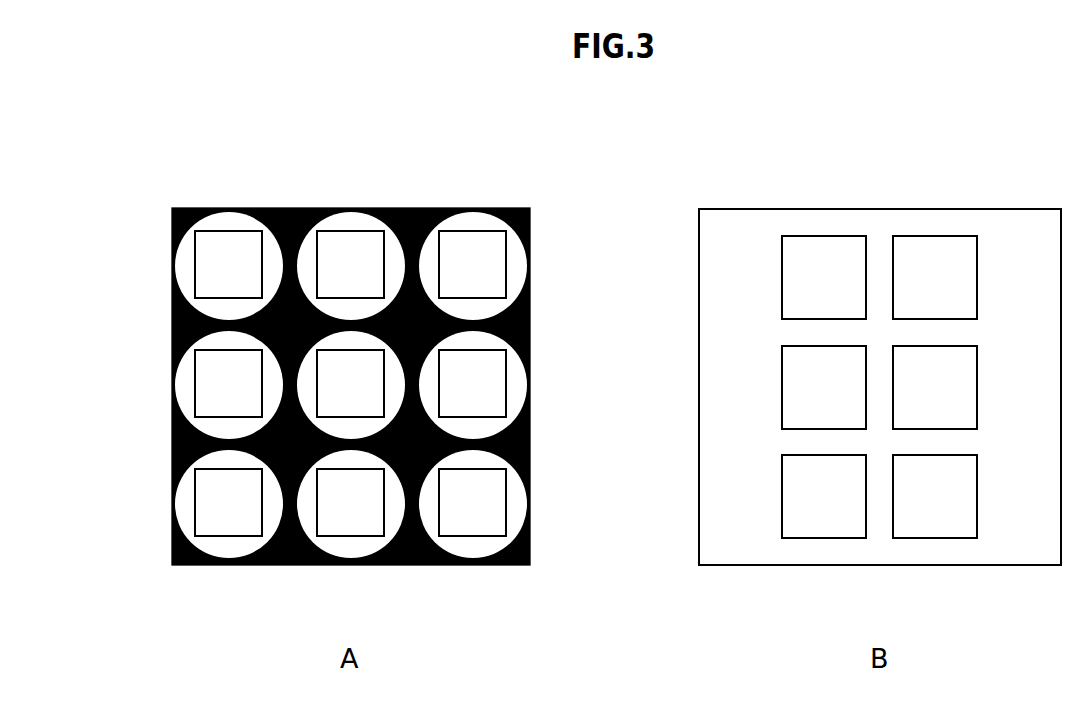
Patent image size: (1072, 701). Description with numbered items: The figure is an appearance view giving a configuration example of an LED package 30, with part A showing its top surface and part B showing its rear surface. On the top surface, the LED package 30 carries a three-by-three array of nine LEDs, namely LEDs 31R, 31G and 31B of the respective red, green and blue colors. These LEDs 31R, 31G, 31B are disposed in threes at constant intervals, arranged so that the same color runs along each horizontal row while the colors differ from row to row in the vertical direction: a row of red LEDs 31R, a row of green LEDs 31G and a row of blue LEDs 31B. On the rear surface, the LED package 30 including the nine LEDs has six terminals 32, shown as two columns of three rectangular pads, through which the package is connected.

The LED package 30 is at (289, 208).
The LED of R color 31R is at (182, 263).
The LED of G color 31G is at (182, 382).
The LED of B color 31B is at (182, 501).
The terminal 32 is at (826, 236).